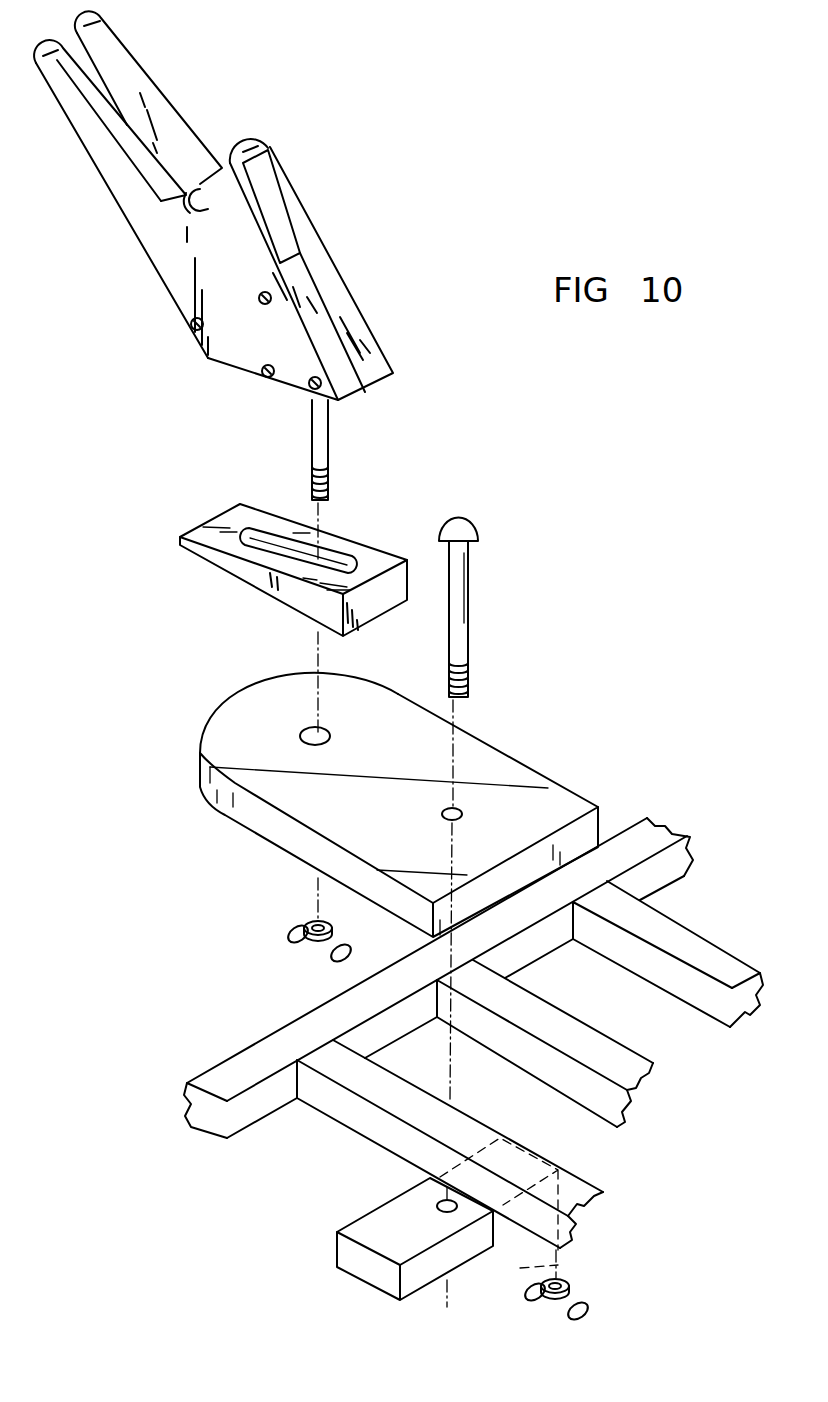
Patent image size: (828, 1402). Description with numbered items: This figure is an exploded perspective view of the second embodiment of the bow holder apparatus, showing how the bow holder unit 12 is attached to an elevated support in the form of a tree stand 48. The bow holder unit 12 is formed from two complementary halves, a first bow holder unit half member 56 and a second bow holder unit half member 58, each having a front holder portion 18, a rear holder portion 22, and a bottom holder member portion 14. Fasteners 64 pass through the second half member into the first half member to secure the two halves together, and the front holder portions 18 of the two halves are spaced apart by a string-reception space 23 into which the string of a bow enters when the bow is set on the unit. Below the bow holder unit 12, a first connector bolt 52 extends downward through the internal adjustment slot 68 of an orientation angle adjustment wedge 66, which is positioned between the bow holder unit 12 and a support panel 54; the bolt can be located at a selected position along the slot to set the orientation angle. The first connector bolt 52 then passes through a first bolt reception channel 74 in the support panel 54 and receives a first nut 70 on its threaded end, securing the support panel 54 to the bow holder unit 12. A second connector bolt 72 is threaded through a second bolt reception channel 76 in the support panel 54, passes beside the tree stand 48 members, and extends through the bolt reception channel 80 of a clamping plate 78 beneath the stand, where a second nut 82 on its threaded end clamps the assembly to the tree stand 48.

The bow holder unit 12 is at (368, 268).
The bottom holder member portion 14 is at (355, 318).
The front holder portion 18 is at (163, 97).
The rear holder portion 22 is at (262, 150).
The string-reception space 23 is at (276, 189).
The tree stand 48 is at (663, 822).
The first connector bolt 52 is at (330, 470).
The support panel 54 is at (270, 837).
The first bow holder unit half member 56 is at (317, 260).
The second bow holder unit half member 58 is at (262, 345).
The fasteners 64 is at (197, 325).
The orientation angle adjustment wedge 66 is at (258, 582).
The internal adjustment slot 68 is at (290, 542).
The first nut 70 is at (290, 935).
The second connector bolt 72 is at (463, 647).
The first bolt reception channel 74 is at (303, 737).
The second bolt reception channel 76 is at (454, 813).
The clamping plate 78 is at (378, 1222).
The bolt reception channel 80 is at (447, 1207).
The second nut 82 is at (577, 1282).